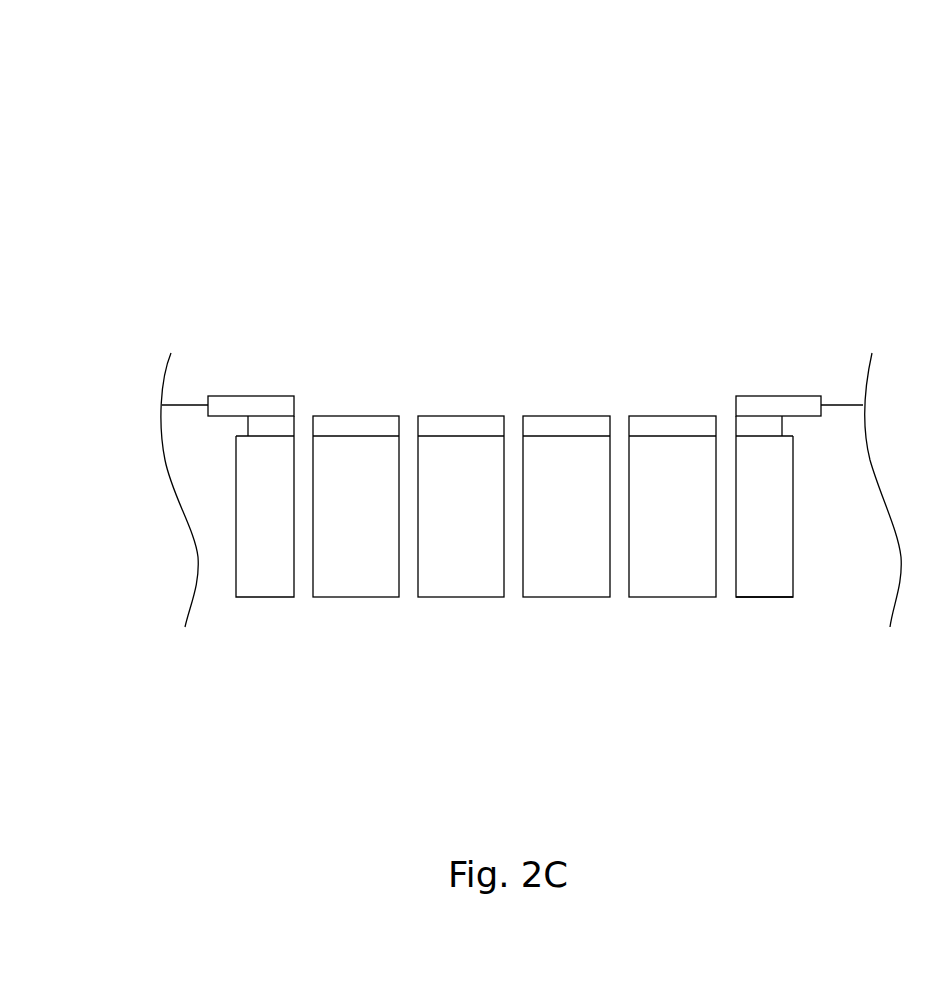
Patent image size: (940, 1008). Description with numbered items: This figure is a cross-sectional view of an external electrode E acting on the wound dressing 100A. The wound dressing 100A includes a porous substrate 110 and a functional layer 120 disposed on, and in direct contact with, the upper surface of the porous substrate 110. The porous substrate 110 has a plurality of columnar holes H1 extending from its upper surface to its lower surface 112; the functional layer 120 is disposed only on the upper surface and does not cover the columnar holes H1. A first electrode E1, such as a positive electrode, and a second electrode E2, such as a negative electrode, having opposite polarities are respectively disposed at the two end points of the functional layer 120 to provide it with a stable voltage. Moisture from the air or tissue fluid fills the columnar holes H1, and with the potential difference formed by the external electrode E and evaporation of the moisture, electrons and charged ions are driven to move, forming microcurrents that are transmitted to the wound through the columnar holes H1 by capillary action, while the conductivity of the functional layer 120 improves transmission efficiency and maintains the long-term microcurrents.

The wound dressing 100A is at (862, 137).
The porous substrate 110 is at (772, 585).
The lower surface 112 is at (749, 598).
The functional layer 120 is at (758, 422).
The external electrode E is at (862, 27).
The first electrode E1 is at (252, 400).
The second electrode E2 is at (797, 400).
The columnar holes H1 is at (621, 590).